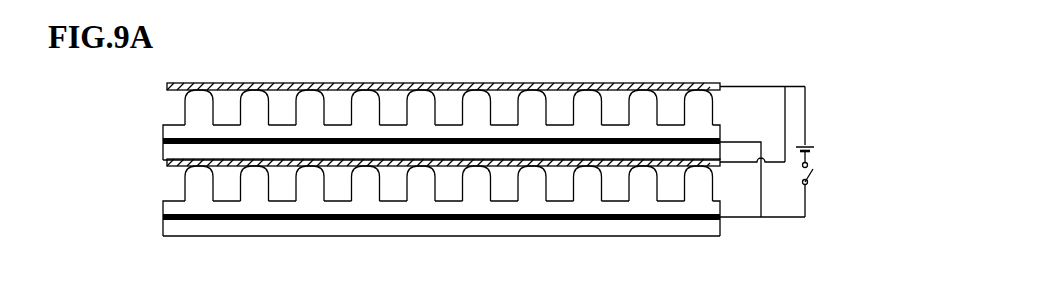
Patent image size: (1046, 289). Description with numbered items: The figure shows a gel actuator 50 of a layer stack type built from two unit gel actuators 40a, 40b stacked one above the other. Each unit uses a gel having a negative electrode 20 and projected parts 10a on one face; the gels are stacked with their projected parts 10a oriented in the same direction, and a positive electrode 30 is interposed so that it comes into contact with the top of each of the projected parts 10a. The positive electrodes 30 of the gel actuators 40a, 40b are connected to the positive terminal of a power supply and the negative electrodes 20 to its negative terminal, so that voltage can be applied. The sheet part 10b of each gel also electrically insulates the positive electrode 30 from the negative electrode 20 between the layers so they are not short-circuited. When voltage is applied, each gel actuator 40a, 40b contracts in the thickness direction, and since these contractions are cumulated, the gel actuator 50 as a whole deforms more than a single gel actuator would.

The projected parts 10a is at (259, 100).
The sheet part 10b is at (446, 150).
The negative electrode 20 is at (362, 137).
The positive electrode 30 is at (558, 87).
The gel actuator 40a is at (158, 87).
The gel actuator 40b is at (158, 166).
The gel actuator 50 is at (650, 58).